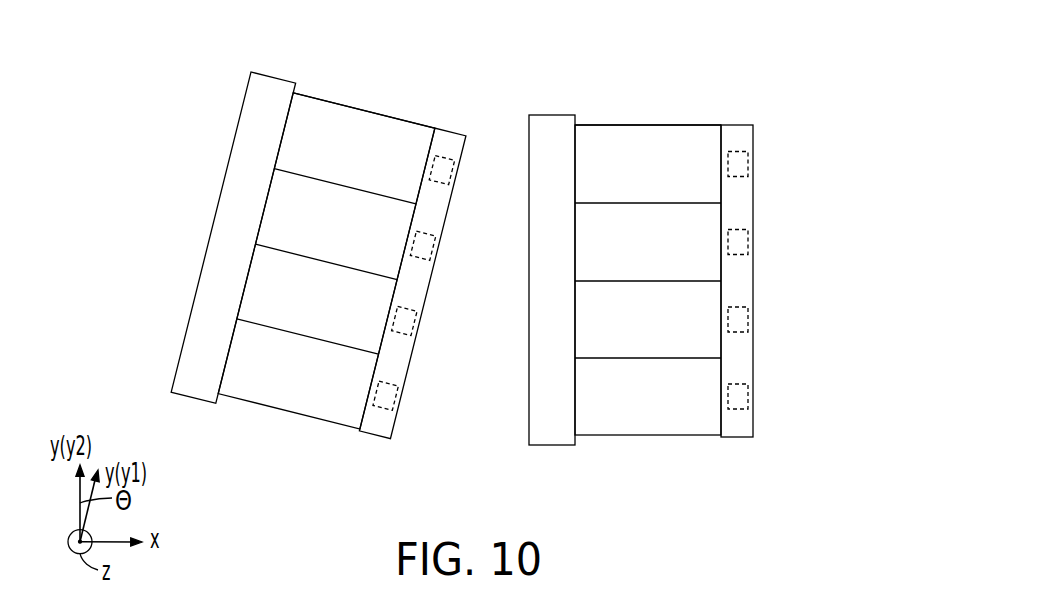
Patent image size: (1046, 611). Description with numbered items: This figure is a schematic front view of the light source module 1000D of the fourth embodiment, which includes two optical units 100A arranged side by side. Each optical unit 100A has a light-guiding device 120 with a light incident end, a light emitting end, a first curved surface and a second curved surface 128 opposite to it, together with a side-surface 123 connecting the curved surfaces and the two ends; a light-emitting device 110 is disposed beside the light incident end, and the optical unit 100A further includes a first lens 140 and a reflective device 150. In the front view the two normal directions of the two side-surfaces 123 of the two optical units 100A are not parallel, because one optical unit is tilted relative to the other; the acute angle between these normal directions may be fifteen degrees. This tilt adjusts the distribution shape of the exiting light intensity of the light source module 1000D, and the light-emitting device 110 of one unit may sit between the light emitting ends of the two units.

The light source module 1000D is at (493, 252).
The optical unit 100A is at (493, 251).
The light-emitting device 110 is at (442, 170).
The light-guiding device 120 is at (287, 387).
The side-surface 123 is at (317, 95).
The second curved surface 128 is at (358, 147).
The first lens 140 is at (198, 380).
The reflective device 150 is at (449, 142).